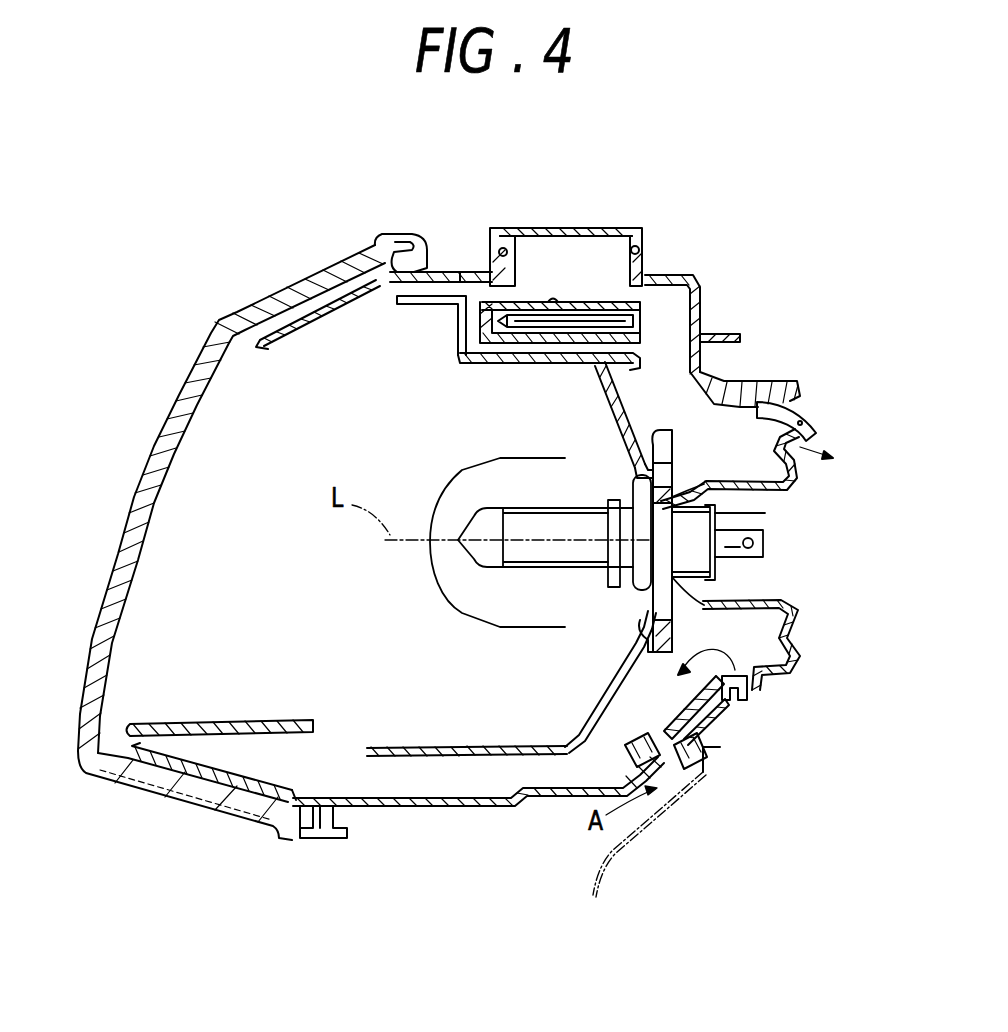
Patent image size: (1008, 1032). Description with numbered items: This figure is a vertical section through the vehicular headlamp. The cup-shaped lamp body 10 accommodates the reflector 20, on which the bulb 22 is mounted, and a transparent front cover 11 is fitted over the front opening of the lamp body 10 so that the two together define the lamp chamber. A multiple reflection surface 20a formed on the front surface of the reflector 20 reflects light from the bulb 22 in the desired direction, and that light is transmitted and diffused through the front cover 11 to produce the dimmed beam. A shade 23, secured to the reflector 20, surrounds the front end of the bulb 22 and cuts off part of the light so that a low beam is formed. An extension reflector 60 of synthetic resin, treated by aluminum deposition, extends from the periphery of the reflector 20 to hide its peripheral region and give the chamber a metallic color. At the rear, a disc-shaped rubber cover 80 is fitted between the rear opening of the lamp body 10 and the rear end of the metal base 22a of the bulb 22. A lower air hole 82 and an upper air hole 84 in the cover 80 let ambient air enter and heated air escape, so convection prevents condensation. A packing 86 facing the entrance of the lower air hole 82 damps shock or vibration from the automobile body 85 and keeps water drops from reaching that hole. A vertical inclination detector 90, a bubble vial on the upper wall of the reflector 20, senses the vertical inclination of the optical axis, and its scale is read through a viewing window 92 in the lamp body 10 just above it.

The lamp body 10 is at (696, 278).
The front cover 11 is at (150, 452).
The reflector 20 is at (621, 396).
The multiple reflection surface 20a is at (630, 428).
The bulb 22 is at (548, 562).
The metal base 22a is at (712, 582).
The shade 23 is at (478, 465).
The extension reflector 60 is at (155, 704).
The cover 80 is at (804, 477).
The lower air hole 82 is at (724, 720).
The upper air hole 84 is at (808, 410).
The automobile body 85 is at (658, 822).
The packing 86 is at (705, 770).
The vertical inclination detector 90 is at (600, 297).
The viewing window 92 is at (566, 227).